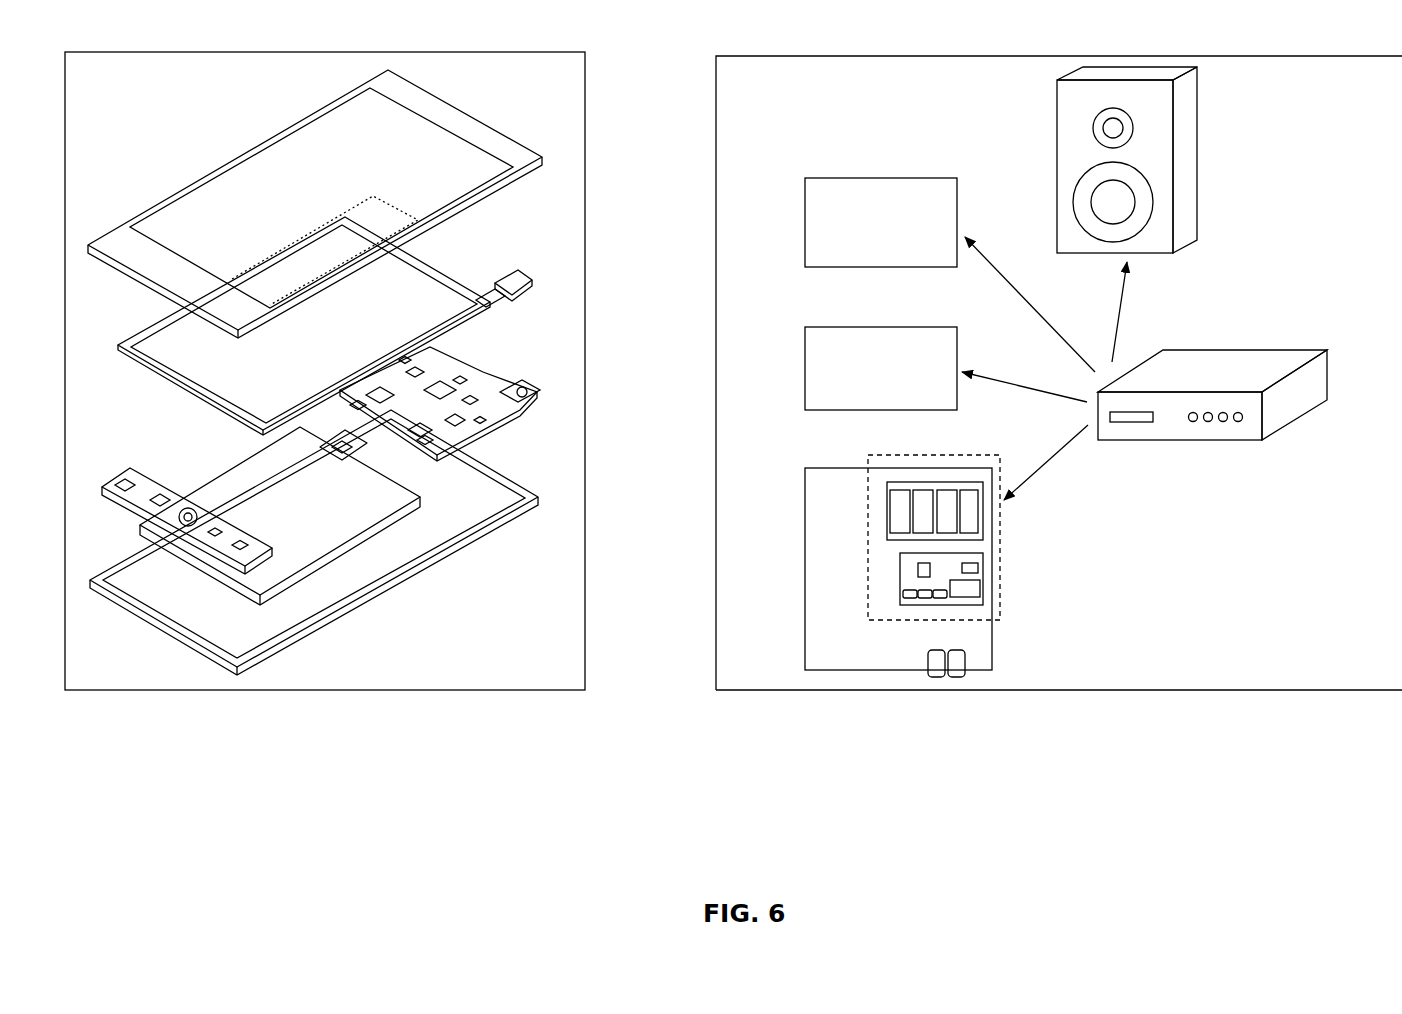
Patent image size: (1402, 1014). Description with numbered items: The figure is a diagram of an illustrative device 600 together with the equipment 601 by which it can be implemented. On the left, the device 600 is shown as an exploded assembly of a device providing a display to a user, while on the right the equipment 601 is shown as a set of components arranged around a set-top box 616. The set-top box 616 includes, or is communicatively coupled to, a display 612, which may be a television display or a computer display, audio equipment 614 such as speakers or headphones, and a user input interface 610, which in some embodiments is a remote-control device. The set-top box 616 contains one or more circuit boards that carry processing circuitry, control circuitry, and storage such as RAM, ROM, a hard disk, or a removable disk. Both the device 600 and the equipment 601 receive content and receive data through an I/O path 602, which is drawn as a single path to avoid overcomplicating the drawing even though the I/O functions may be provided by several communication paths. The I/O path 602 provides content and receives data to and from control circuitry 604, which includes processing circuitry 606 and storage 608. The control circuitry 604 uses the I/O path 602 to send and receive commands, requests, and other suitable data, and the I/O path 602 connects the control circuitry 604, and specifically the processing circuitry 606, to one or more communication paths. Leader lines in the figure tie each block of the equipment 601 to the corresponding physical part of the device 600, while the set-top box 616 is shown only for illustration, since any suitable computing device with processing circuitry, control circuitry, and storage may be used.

The device 600 is at (158, 48).
The equipment 601 is at (1265, 50).
The I/O path 602 is at (180, 529).
The control circuitry 604 is at (865, 587).
The processing circuitry 606 is at (896, 561).
The storage 608 is at (884, 510).
The user input interface 610 is at (800, 221).
The display 612 is at (801, 328).
The audio equipment 614 is at (1052, 167).
The set-top box 616 is at (1203, 350).